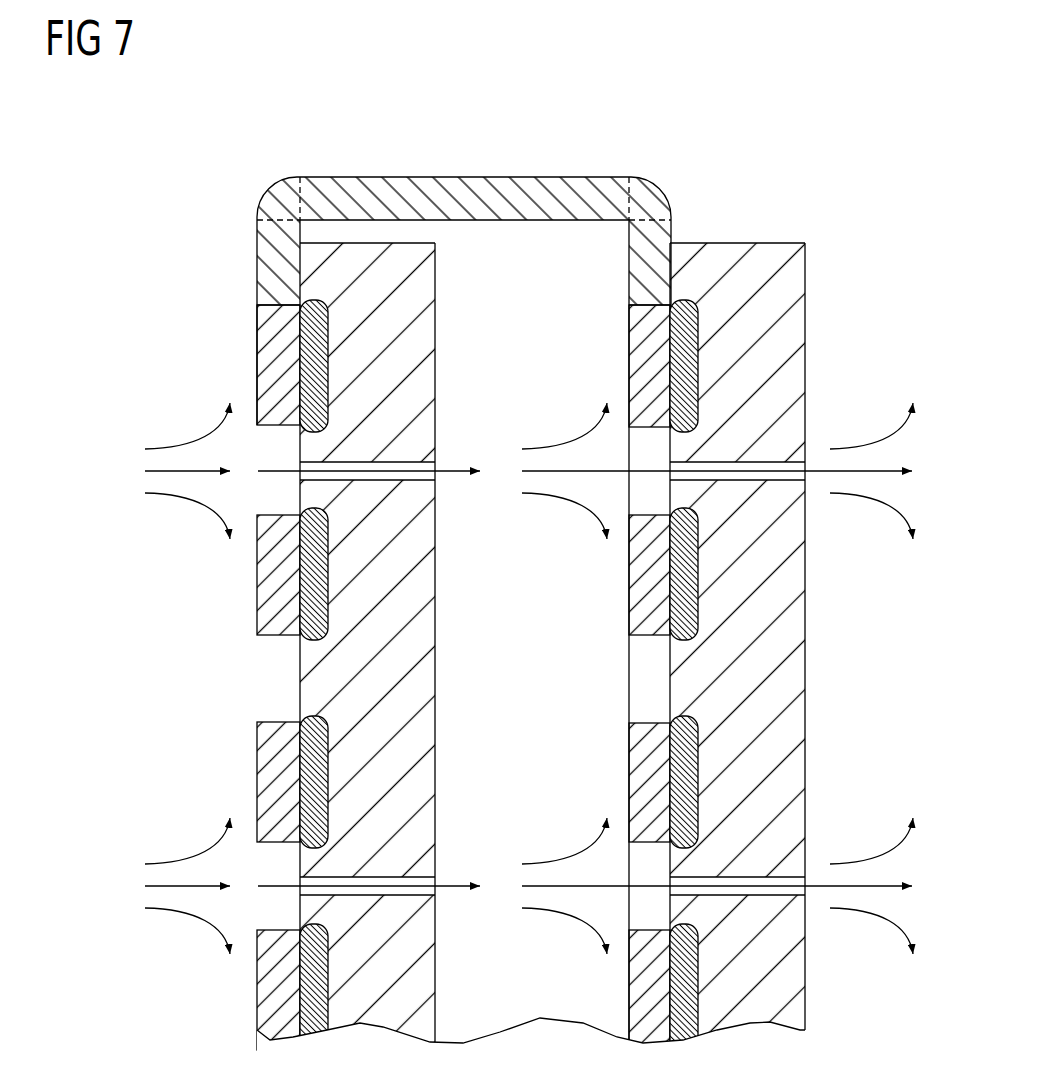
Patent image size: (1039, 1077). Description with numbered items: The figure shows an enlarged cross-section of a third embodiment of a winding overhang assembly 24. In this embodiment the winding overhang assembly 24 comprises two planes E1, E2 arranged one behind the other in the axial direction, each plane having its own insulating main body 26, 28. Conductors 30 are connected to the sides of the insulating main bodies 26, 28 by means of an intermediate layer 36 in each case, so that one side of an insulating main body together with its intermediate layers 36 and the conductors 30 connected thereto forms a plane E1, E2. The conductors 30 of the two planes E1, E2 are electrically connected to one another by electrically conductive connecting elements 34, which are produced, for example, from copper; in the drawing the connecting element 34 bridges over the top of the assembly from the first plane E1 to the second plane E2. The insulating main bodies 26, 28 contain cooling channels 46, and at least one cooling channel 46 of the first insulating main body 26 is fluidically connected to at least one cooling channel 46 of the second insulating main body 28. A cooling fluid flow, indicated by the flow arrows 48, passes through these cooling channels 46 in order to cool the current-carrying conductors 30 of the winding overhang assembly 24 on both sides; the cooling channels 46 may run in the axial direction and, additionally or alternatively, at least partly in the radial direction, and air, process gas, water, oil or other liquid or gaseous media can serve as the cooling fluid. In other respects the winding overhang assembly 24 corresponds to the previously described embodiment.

The winding overhang assembly 24 is at (597, 110).
The insulating main body 26 is at (342, 273).
The insulating main body 28 is at (790, 331).
The conductor 30 is at (300, 338).
The electrically conductive connecting element 34 is at (473, 192).
The intermediate layer 36 is at (322, 375).
The cooling channel 46 is at (410, 480).
The flow direction 48 is at (128, 471).
The plane E1 is at (358, 226).
The plane E2 is at (737, 226).